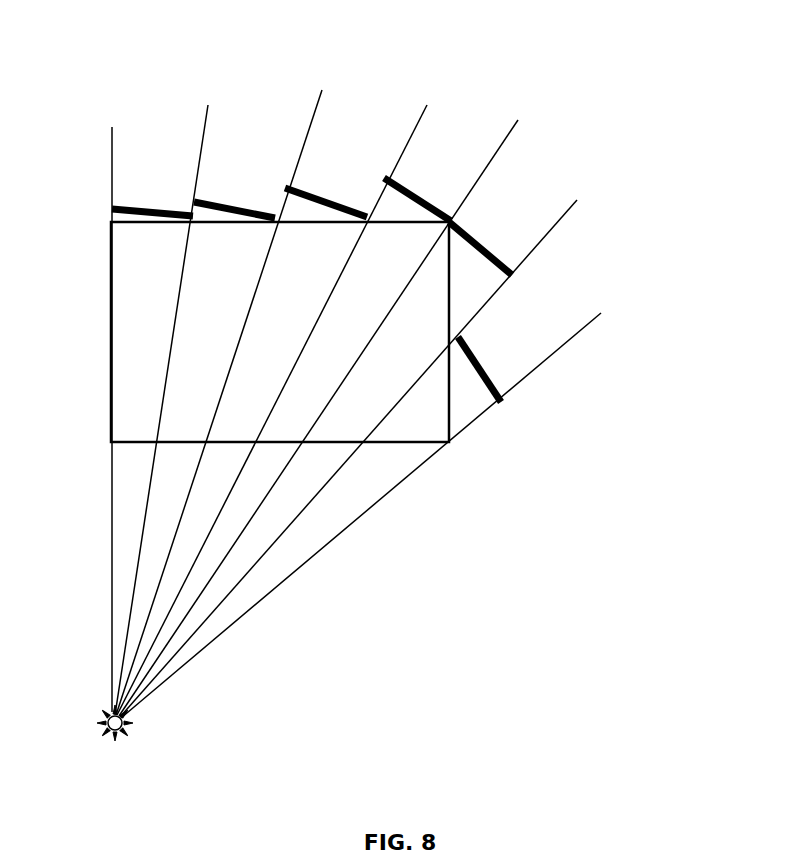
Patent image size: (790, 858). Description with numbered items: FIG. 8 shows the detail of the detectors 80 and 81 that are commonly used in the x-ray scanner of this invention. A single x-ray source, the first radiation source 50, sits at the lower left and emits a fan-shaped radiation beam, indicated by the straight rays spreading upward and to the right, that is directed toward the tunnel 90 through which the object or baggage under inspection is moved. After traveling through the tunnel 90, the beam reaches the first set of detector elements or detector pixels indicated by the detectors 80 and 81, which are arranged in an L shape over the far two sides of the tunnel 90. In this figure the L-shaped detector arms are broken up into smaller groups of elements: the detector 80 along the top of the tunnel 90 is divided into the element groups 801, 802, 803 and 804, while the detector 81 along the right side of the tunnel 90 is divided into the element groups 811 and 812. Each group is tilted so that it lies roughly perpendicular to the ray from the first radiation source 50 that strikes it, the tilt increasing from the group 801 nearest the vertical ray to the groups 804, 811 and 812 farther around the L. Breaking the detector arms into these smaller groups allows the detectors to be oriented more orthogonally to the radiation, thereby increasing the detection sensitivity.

The detector 80 is at (375, 88).
The detector 81 is at (563, 268).
The tunnel 90 is at (127, 330).
The detector element group 801 is at (157, 203).
The detector element group 802 is at (239, 202).
The detector element group 803 is at (330, 187).
The detector element group 804 is at (435, 193).
The detector element group 811 is at (497, 245).
The detector element group 812 is at (495, 373).
The first radiation source 50 is at (142, 733).